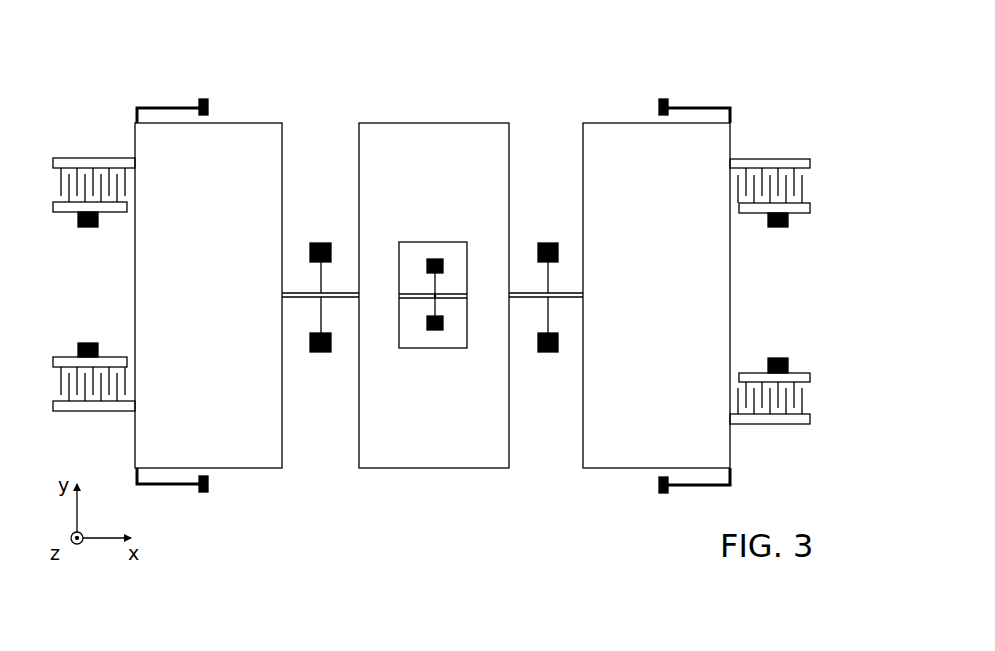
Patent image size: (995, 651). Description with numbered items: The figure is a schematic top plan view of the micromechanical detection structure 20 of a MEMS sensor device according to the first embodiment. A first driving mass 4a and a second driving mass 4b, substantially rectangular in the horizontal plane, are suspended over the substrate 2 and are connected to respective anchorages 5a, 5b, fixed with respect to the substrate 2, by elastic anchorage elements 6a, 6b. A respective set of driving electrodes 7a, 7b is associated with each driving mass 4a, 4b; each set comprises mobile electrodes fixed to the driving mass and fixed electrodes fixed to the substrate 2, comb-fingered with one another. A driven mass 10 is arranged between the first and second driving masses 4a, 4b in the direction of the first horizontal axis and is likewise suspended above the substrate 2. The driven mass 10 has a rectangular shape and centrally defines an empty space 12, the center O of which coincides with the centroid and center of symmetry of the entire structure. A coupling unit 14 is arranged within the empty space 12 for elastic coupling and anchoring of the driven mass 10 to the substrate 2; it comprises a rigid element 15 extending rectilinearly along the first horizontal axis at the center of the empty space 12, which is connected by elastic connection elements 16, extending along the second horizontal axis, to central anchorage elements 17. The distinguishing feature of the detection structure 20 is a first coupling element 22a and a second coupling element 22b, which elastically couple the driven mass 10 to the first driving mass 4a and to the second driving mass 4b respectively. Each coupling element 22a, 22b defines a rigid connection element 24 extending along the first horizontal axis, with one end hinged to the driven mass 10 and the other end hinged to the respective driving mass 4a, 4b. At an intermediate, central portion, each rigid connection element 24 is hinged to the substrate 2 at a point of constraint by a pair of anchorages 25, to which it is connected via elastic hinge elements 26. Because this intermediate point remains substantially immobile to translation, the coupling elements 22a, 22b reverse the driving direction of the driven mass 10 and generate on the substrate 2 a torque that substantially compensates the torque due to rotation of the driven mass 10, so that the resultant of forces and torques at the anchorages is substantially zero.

The detection structure 20 is at (437, 268).
The driven mass 10 is at (399, 128).
The first driving mass 4a is at (607, 130).
The second driving mass 4b is at (264, 138).
The anchorage 5a is at (664, 99).
The anchorage 5b is at (210, 99).
The elastic anchorage element 6a is at (718, 106).
The elastic anchorage element 6b is at (147, 106).
The set of driving electrodes 7a is at (812, 186).
The set of driving electrodes 7b is at (53, 184).
The first coupling element 22a is at (567, 189).
The second coupling element 22b is at (433, 261).
The rigid connection element 24 is at (347, 293).
The anchorages 25 is at (322, 243).
The elastic hinge elements 26 is at (317, 292).
The coupling unit 14 is at (437, 283).
The empty space 12 is at (456, 247).
The rigid element 15 is at (410, 299).
The elastic connection elements 16 is at (433, 281).
The central anchorage elements 17 is at (443, 265).
The substrate 2 is at (465, 346).
The center O is at (437, 294).